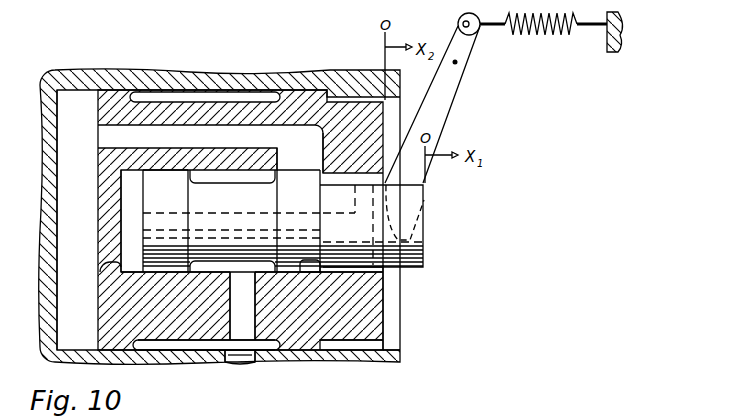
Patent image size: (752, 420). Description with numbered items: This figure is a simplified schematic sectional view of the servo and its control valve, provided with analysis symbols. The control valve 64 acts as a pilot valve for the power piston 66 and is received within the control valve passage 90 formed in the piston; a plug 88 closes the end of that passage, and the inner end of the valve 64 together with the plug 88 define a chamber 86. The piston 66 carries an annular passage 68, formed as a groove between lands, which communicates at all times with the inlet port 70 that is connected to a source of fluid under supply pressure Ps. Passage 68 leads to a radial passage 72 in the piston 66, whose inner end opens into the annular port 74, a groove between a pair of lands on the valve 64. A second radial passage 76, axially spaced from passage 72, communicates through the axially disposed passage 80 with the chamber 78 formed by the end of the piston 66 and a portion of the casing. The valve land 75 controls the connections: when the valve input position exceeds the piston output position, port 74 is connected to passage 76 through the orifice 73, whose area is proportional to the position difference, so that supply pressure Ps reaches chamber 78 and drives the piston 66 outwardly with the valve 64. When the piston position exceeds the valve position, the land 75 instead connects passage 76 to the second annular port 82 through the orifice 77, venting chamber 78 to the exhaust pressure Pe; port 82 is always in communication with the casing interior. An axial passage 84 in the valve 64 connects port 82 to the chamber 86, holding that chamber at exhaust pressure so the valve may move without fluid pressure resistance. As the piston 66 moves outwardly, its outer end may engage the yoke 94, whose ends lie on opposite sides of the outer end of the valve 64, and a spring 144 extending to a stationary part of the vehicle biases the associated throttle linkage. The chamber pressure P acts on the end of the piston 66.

The control valve 64 is at (416, 247).
The power piston 66 is at (110, 310).
The annular passage 68 is at (177, 345).
The inlet port 70 is at (252, 360).
The radial passage 72 is at (247, 321).
The orifice 73 is at (284, 168).
The annular port 74 is at (222, 268).
The valve land 75 is at (303, 272).
The second radial passage 76 is at (310, 152).
The orifice 77 is at (300, 196).
The chamber 78 is at (70, 150).
The axially disposed passage 80 is at (180, 150).
The second annular port 82 is at (356, 272).
The axial passage 84 is at (257, 213).
The chamber 86 is at (128, 208).
The plug 88 is at (106, 253).
The control valve passage 90 is at (118, 265).
The yoke 94 is at (448, 92).
The spring 144 is at (560, 40).
The pressure chamber P is at (68, 113).
The exhaust pressure Pe is at (368, 272).
The supply pressure Ps is at (234, 362).